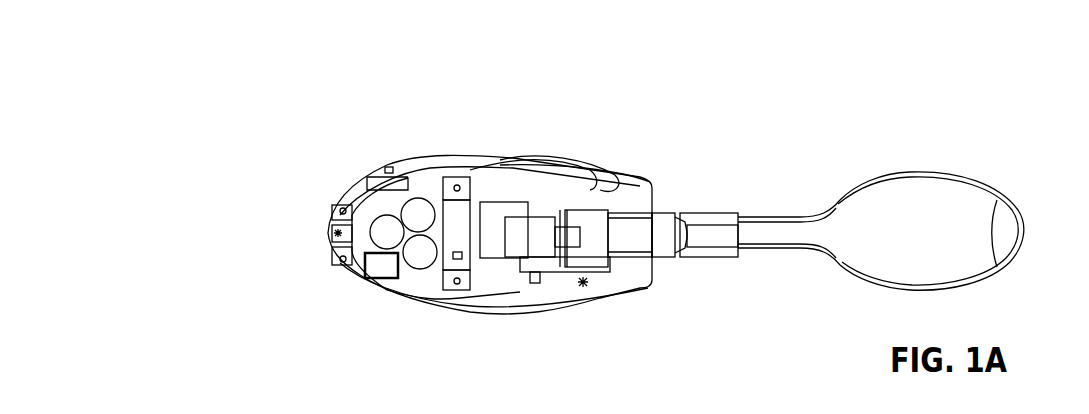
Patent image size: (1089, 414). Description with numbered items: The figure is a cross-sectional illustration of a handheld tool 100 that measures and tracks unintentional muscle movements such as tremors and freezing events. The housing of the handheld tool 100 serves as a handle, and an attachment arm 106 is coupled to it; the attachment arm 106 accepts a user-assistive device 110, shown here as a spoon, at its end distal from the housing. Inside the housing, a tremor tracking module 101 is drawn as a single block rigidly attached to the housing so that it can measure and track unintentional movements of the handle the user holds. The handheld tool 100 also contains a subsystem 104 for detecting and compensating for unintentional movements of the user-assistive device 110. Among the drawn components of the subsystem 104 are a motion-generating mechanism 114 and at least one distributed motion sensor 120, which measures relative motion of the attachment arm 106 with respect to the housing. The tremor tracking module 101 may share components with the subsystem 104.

The handheld tool 100 is at (307, 133).
The tremor tracking module 101 is at (374, 265).
The subsystem 104 is at (586, 196).
The attachment arm 106 is at (748, 258).
The user-assistive device 110 is at (960, 255).
The motion-generating mechanism 114 is at (489, 216).
The distributed motion sensor 120 is at (520, 287).